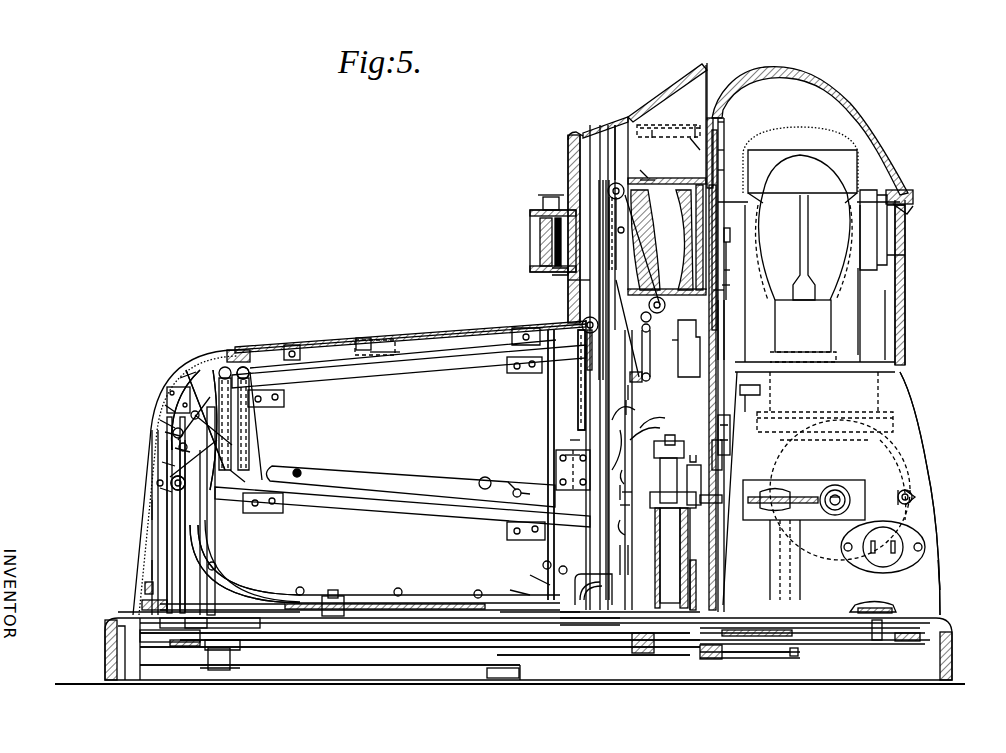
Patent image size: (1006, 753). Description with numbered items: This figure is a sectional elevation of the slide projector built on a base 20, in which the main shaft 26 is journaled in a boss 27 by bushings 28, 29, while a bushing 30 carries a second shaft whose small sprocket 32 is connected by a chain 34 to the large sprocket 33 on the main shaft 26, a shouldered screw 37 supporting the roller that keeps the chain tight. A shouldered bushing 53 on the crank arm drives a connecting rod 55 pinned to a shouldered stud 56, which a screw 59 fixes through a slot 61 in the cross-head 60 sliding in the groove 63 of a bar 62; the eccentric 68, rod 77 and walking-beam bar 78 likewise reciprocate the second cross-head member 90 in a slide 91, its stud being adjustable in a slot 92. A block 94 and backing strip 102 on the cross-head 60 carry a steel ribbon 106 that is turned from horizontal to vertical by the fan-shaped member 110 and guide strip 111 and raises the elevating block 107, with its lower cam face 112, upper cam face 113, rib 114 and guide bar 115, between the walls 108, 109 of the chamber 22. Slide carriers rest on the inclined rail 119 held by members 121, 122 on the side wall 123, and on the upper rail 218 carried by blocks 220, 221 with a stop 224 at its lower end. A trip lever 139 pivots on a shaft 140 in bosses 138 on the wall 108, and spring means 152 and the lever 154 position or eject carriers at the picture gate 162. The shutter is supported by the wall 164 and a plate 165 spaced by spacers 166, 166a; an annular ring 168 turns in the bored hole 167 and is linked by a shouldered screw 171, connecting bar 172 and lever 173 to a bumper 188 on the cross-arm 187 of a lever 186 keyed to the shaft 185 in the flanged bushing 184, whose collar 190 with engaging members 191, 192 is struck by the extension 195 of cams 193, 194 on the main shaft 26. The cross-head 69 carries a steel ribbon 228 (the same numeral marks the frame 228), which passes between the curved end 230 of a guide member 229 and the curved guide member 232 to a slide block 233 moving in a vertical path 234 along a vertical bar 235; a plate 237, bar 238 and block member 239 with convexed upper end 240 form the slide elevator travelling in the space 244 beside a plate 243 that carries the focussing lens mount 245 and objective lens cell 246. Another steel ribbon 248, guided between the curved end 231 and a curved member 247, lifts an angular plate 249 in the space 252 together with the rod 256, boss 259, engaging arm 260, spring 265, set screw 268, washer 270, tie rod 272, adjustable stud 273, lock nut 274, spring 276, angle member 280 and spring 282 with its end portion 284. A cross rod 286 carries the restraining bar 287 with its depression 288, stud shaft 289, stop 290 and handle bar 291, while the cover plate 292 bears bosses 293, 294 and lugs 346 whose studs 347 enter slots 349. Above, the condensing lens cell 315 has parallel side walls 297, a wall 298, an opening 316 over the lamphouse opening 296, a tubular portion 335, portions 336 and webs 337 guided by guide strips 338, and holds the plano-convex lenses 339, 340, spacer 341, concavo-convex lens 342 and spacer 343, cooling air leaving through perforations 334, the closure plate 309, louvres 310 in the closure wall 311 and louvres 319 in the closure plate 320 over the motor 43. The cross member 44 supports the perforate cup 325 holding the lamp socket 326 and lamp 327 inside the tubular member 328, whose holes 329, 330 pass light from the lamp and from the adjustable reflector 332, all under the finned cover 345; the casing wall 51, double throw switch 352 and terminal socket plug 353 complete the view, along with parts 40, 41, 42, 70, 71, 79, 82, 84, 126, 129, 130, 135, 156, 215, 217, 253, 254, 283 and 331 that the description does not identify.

The base 20 is at (952, 628).
The cover plate 22 is at (602, 128).
The column 26 is at (671, 558).
The column wall 27 is at (690, 586).
The column wall 28 is at (691, 596).
The link 29 is at (628, 507).
The post 30 is at (800, 576).
The bottom plate 32 is at (615, 657).
The rod 33 is at (778, 652).
The stop 34 is at (800, 654).
The post core 37 is at (803, 545).
The rack 40 is at (790, 492).
The knob 41 is at (838, 485).
The shaft 42 is at (848, 497).
The dial 43 is at (882, 470).
The bracket 44 is at (898, 415).
The side wall 51 is at (925, 522).
The foot 53 is at (503, 679).
The slide bar 55 is at (375, 665).
The block 56 is at (230, 653).
The guide 59 is at (232, 640).
The bar 60 is at (165, 642).
The pad 61 is at (198, 646).
The rail 62 is at (292, 635).
The rail 63 is at (335, 640).
The rod 68 is at (745, 652).
The pad 69 is at (740, 648).
The block 70 is at (708, 657).
The block 71 is at (633, 641).
The rail 77 is at (855, 636).
The rail 78 is at (898, 645).
The pad 79 is at (910, 641).
The bracket 82 is at (894, 604).
The post 84 is at (878, 640).
The rack 90 is at (347, 604).
The rail 91 is at (402, 604).
The slide block 92 is at (332, 596).
The block 94 is at (192, 616).
The plate 102 is at (208, 622).
The link 106 is at (622, 480).
The link 107 is at (624, 470).
The rod 108 is at (630, 404).
The rod 109 is at (630, 392).
The housing 110 is at (593, 589).
The plate 111 is at (602, 622).
The lever 112 is at (626, 455).
The lever 113 is at (650, 435).
The lever 114 is at (652, 426).
The lever 115 is at (615, 418).
The arm 119 is at (450, 514).
The clamp plate 121 is at (258, 513).
The clamp plate 122 is at (512, 537).
The compartment 123 is at (378, 428).
The link 126 is at (626, 523).
The lever 129 is at (626, 560).
The spring 130 is at (596, 585).
The link 135 is at (626, 492).
The block 138 is at (652, 378).
The slide 139 is at (672, 346).
The slide 140 is at (670, 360).
The link 152 is at (651, 329).
The rod 154 is at (726, 258).
The link 156 is at (652, 317).
The pin 162 is at (568, 282).
The rod 164 is at (722, 292).
The plate 165 is at (717, 144).
The rod 166 is at (722, 318).
The rod end 166a is at (724, 126).
The plate 167 is at (716, 157).
The plate 168 is at (716, 173).
The pin 171 is at (728, 240).
The rod 172 is at (726, 280).
The lever 173 is at (673, 440).
The bracket 184 is at (716, 503).
The plate 185 is at (746, 485).
The bracket 186 is at (722, 450).
The bracket 187 is at (729, 434).
The bracket 188 is at (738, 405).
The block 190 is at (694, 485).
The pin 191 is at (693, 451).
The column 192 is at (667, 555).
The plate 193 is at (673, 500).
The block 194 is at (669, 449).
The block 195 is at (668, 480).
The rod 215 is at (232, 432).
The rod 217 is at (249, 447).
The arm 218 is at (456, 366).
The clamp plate 220 is at (283, 404).
The clamp plate 221 is at (524, 374).
The block 224 is at (240, 349).
The plate 228 is at (616, 125).
The rail 229 is at (440, 604).
The plate 230 is at (540, 580).
The plate 231 is at (236, 578).
The plate 232 is at (521, 594).
The plate 233 is at (562, 470).
The rod 234 is at (560, 416).
The rod 235 is at (547, 405).
The link 237 is at (570, 455).
The link 238 is at (574, 441).
The slot 239 is at (578, 395).
The pivot 240 is at (582, 318).
The wall 243 is at (568, 174).
The plate 244 is at (556, 272).
The coil 245 is at (534, 212).
The core 246 is at (541, 252).
The plate 247 is at (222, 566).
The cam 248 is at (165, 392).
The link 249 is at (180, 372).
The post 252 is at (178, 540).
The post 253 is at (168, 525).
The post 254 is at (183, 553).
The link 256 is at (166, 490).
The link 259 is at (167, 465).
The link 260 is at (197, 365).
The link 265 is at (182, 450).
The link 268 is at (172, 436).
The link 270 is at (163, 425).
The pivot 272 is at (170, 481).
The block 273 is at (145, 588).
The block 274 is at (142, 604).
The link 276 is at (222, 476).
The link 280 is at (172, 378).
The link 282 is at (213, 365).
The link 283 is at (168, 410).
The link 284 is at (246, 366).
The pin 286 is at (299, 470).
The bar 287 is at (386, 480).
The pin 288 is at (513, 489).
The link 289 is at (528, 494).
The link 290 is at (510, 482).
The pin 291 is at (483, 477).
The rail 292 is at (318, 342).
The plate 293 is at (292, 345).
The plate 294 is at (524, 332).
The plate 296 is at (720, 130).
The plate 297 is at (654, 135).
The plate 298 is at (672, 125).
The wall top 309 is at (578, 125).
The strip 310 is at (142, 565).
The strip 311 is at (148, 508).
The cover 315 is at (678, 95).
The wall 316 is at (712, 72).
The wall 319 is at (916, 442).
The wall 320 is at (940, 565).
The wall 325 is at (890, 340).
The lamp base 326 is at (803, 331).
The lamp 327 is at (810, 286).
The wall 328 is at (905, 306).
The shelf 329 is at (762, 204).
The bracket 330 is at (872, 194).
The reflector 331 is at (810, 130).
The wall 332 is at (905, 292).
The bar 334 is at (714, 290).
The plate 335 is at (643, 170).
The plate 336 is at (690, 138).
The plate 337 is at (694, 130).
The plate 338 is at (700, 181).
The roller 339 is at (615, 184).
The lens 340 is at (663, 212).
The plate 341 is at (645, 181).
The wall 342 is at (714, 180).
The link 343 is at (666, 306).
The hood 345 is at (880, 135).
The plate 346 is at (380, 352).
The plate 347 is at (378, 343).
The block 349 is at (362, 338).
The switch 352 is at (915, 493).
The socket 353 is at (905, 548).